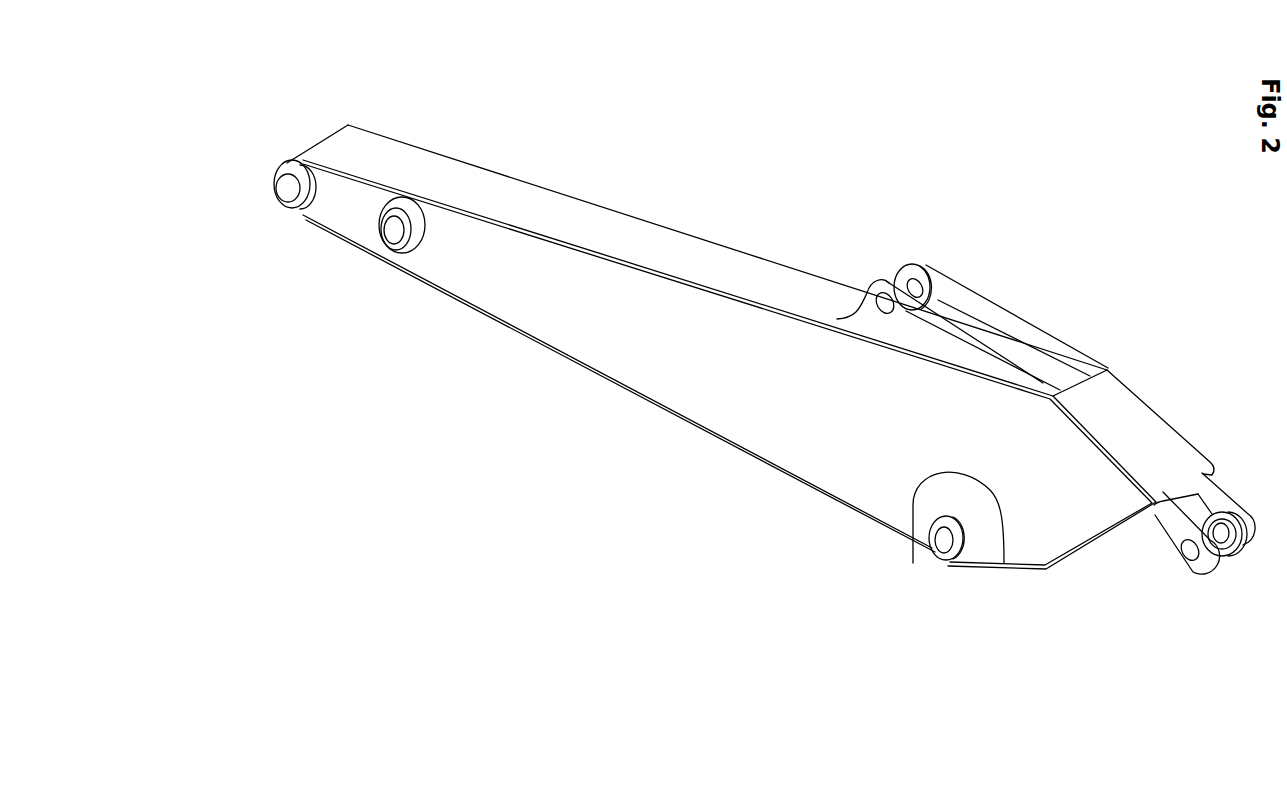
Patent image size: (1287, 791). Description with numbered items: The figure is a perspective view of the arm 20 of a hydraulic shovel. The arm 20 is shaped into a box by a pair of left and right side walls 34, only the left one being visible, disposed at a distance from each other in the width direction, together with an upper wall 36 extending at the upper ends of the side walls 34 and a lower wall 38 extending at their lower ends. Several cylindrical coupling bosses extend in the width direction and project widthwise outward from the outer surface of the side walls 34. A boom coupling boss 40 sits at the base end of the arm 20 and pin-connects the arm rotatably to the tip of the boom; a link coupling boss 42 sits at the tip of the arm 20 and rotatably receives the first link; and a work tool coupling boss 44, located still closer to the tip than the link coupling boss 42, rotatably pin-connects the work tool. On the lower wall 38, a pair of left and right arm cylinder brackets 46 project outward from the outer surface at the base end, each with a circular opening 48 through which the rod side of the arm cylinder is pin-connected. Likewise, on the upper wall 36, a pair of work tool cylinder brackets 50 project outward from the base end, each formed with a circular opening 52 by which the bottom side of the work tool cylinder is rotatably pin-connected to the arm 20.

The arm 20 is at (723, 377).
The side wall 34 is at (619, 383).
The upper wall 36 is at (568, 212).
The lower wall 38 is at (557, 355).
The boom coupling boss 40 is at (947, 566).
The link coupling boss 42 is at (400, 222).
The work tool coupling boss 44 is at (276, 181).
The arm cylinder bracket 46 is at (1143, 555).
The circular opening 48 is at (1183, 560).
The work tool cylinder bracket 50 is at (932, 338).
The circular opening 52 is at (863, 294).